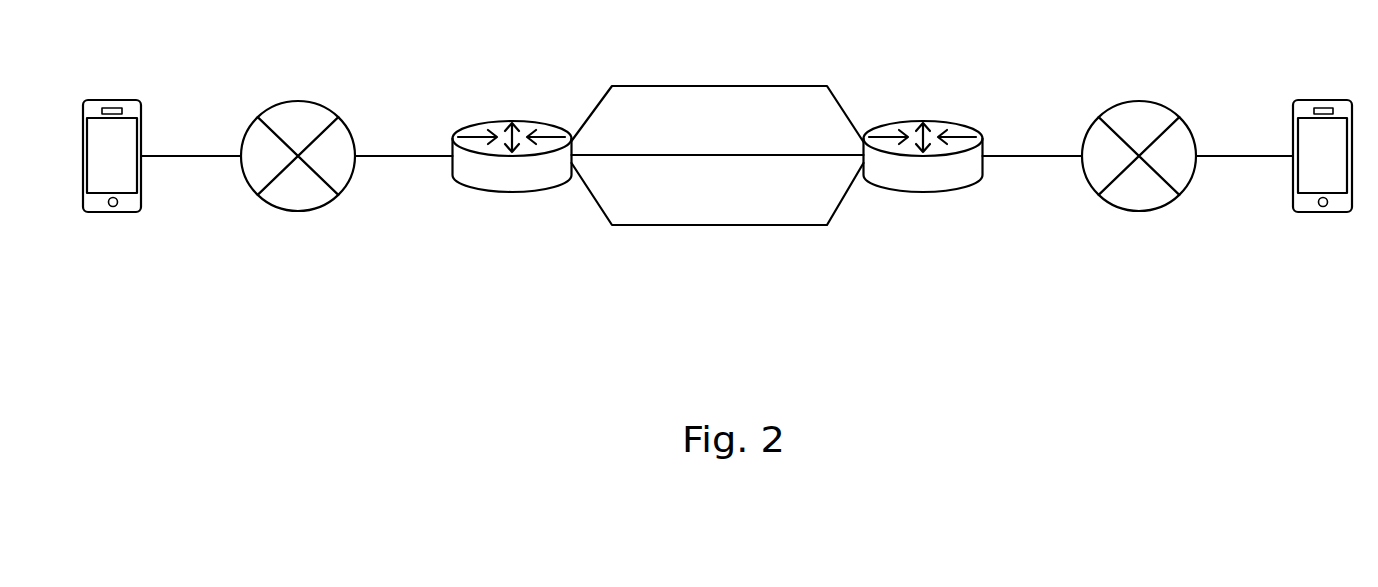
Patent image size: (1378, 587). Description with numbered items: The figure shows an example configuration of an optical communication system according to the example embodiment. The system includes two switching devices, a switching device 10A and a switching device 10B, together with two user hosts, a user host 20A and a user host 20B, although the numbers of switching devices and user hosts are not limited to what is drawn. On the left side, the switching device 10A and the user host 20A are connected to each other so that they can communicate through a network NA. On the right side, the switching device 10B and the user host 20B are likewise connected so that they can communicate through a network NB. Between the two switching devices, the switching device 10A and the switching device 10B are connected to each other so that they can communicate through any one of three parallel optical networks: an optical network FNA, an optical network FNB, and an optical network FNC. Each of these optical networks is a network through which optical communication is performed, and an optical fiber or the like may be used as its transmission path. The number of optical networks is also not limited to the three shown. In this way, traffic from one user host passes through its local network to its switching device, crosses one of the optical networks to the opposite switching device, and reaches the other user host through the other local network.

The user host 20A is at (103, 97).
The user host 20B is at (1315, 97).
The network NA is at (325, 107).
The network NB is at (1165, 107).
The switching device 10A is at (535, 120).
The switching device 10B is at (942, 120).
The optical network FNA is at (785, 85).
The optical network FNB is at (785, 152).
The optical network FNC is at (785, 222).